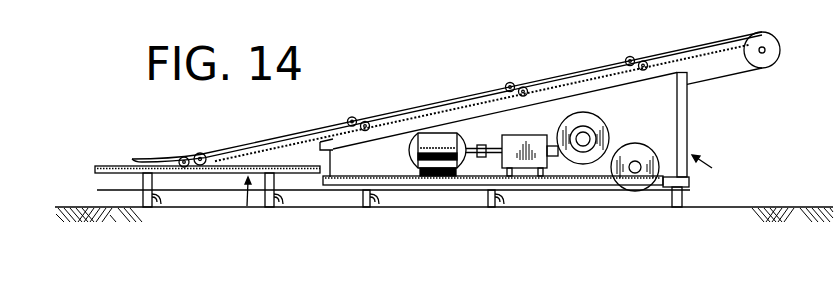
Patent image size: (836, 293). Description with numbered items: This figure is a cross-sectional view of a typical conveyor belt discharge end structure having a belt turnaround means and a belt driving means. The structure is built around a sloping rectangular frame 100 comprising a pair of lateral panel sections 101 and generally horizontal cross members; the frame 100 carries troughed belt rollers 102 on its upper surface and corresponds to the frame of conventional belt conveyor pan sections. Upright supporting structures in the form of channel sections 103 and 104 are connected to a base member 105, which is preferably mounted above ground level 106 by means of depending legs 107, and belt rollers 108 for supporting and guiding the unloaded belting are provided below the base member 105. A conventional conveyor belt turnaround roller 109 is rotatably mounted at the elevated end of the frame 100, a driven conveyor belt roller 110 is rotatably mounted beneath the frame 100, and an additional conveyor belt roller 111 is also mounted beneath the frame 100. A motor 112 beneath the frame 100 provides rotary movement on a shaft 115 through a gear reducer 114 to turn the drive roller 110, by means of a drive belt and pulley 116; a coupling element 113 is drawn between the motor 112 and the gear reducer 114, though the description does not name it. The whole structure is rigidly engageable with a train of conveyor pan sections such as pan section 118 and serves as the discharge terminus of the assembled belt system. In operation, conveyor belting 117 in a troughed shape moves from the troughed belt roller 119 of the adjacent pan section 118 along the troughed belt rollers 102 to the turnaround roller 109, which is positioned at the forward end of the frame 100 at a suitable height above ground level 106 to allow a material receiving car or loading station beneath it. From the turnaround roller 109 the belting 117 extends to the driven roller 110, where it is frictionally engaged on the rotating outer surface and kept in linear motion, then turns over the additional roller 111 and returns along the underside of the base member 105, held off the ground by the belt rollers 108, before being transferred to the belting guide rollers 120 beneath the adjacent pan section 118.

The sloping rectangular frame 100 is at (717, 168).
The lateral panel sections 101 is at (368, 138).
The troughed belt rollers 102 is at (351, 117).
The channel section 103 is at (325, 158).
The channel section 104 is at (688, 123).
The base member 105 is at (432, 186).
The ground level 106 is at (88, 206).
The depending legs 107 is at (367, 200).
The belt rollers 108 is at (381, 203).
The conveyor belt turnaround roller 109 is at (775, 45).
The driven conveyor belt roller 110 is at (567, 120).
The additional conveyor belt roller 111 is at (641, 146).
The motor 112 is at (410, 155).
The coupling 113 is at (495, 145).
The gear reducer 114 is at (533, 136).
The shaft 115 is at (549, 157).
The pulley 116 is at (597, 131).
The conveyor belting 117 is at (178, 156).
The conveyor pan section 118 is at (245, 201).
The troughed belt roller 119 is at (208, 142).
The belting guide rollers 120 is at (163, 201).